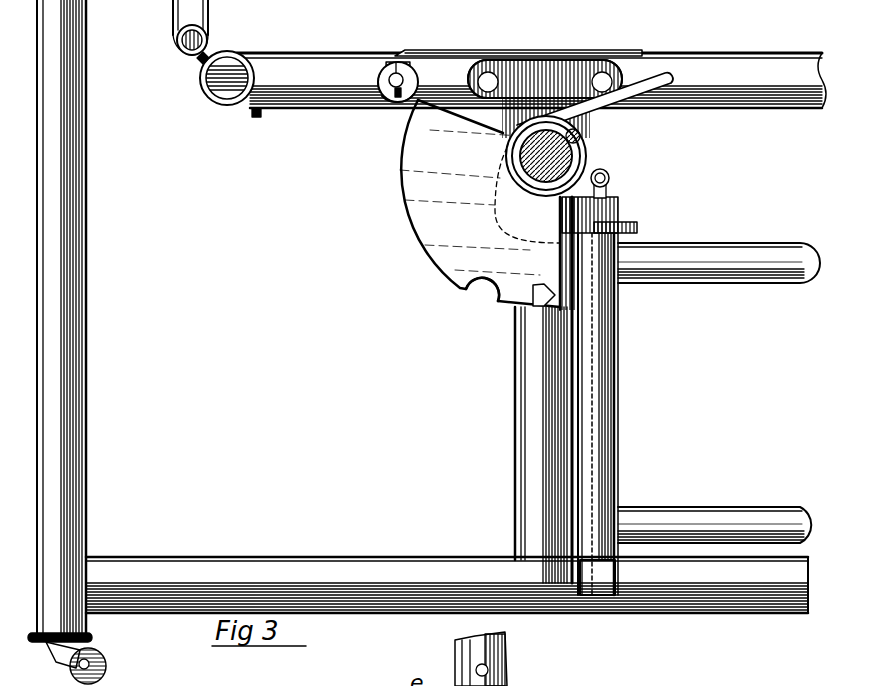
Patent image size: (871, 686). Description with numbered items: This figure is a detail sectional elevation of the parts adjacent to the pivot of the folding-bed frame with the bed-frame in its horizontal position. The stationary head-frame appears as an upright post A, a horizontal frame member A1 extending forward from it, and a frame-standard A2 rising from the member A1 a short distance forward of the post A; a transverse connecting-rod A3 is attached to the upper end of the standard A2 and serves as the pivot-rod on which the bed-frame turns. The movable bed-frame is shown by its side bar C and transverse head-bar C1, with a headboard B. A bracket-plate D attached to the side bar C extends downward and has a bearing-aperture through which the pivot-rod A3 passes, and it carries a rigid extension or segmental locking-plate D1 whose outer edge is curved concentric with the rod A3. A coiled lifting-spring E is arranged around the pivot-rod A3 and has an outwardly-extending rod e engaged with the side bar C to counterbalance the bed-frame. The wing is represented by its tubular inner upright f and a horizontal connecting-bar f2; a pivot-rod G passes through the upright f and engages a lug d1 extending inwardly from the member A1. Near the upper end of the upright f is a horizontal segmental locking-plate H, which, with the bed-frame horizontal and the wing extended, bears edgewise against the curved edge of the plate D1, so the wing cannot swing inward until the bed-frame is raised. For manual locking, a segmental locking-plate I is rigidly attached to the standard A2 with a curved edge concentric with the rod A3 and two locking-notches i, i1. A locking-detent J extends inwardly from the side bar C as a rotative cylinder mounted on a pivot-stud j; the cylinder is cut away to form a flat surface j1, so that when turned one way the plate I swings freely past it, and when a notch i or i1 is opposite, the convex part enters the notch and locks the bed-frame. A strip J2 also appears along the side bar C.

The upright post A is at (62, 336).
The horizontal frame member A1 is at (364, 557).
The frame-standard A2 is at (526, 412).
The transverse connecting-rod A3 is at (588, 157).
The headboard B is at (206, 26).
The side bar C is at (531, 85).
The transverse head-bar C1 is at (203, 80).
The bracket-plate D is at (548, 80).
The segmental locking-plate D1 is at (619, 208).
The lifting-spring E is at (520, 158).
The outwardly-extending rod e is at (660, 94).
The inner upright f is at (619, 338).
The horizontal connecting-bar f2 is at (715, 507).
The pivot-rod G is at (609, 178).
The horizontal segmental locking-plate H is at (638, 228).
The segmental locking-plate I is at (480, 203).
The locking-notch i is at (412, 100).
The locking-notch i1 is at (487, 294).
The locking-detent J is at (385, 100).
The pivot-stud j is at (378, 88).
The flat surface j1 is at (399, 62).
The strip J2 is at (584, 54).
The lug d1 is at (618, 613).